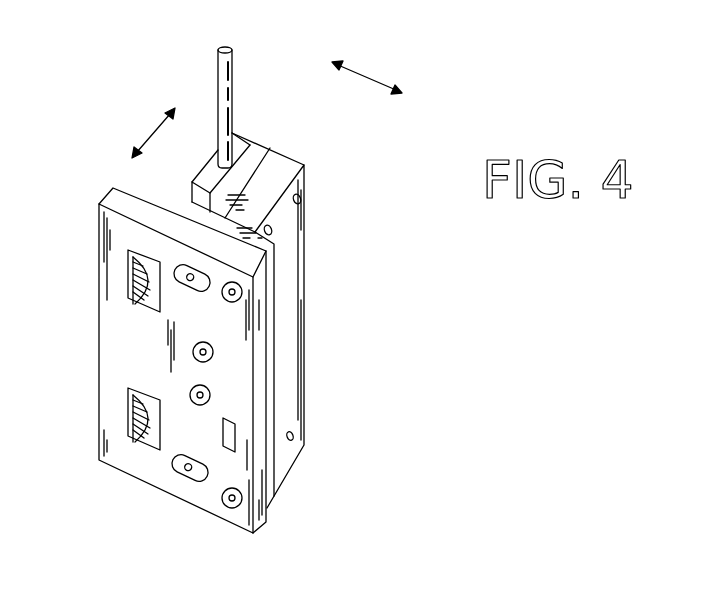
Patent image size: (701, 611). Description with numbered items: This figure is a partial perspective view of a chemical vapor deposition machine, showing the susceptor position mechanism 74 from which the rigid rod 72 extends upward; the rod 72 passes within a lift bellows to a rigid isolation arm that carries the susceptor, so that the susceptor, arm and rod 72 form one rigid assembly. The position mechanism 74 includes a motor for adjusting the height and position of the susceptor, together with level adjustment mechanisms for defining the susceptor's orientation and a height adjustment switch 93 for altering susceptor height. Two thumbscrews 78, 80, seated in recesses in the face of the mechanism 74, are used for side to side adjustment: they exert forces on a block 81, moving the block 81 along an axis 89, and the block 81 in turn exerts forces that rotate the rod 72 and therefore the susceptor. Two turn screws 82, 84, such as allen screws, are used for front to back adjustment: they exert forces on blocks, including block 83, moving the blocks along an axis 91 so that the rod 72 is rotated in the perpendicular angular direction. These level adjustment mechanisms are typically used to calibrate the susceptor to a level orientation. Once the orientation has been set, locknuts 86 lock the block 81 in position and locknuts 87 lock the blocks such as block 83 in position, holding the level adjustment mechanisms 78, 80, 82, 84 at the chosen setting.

The rigid rod 72 is at (233, 72).
The susceptor position mechanism 74 is at (99, 347).
The thumbscrew 78 is at (131, 275).
The thumbscrew 80 is at (131, 422).
The block 81 is at (305, 165).
The turn screw 82 is at (192, 276).
The block 83 is at (250, 143).
The turn screw 84 is at (272, 147).
The locknut 86 is at (235, 292).
The locknut 87 is at (272, 231).
The axis 89 is at (372, 77).
The axis 91 is at (152, 132).
The height adjustment switch 93 is at (236, 437).